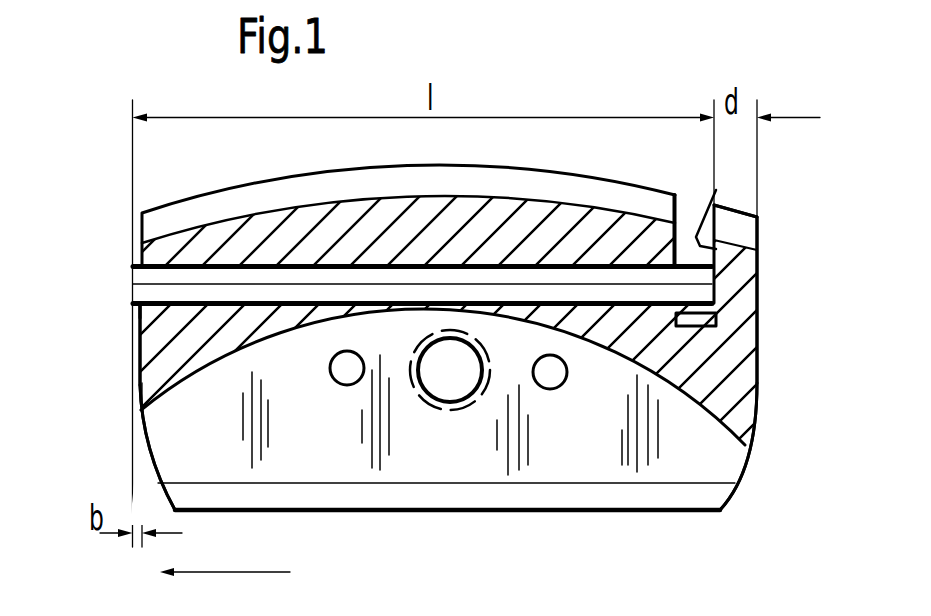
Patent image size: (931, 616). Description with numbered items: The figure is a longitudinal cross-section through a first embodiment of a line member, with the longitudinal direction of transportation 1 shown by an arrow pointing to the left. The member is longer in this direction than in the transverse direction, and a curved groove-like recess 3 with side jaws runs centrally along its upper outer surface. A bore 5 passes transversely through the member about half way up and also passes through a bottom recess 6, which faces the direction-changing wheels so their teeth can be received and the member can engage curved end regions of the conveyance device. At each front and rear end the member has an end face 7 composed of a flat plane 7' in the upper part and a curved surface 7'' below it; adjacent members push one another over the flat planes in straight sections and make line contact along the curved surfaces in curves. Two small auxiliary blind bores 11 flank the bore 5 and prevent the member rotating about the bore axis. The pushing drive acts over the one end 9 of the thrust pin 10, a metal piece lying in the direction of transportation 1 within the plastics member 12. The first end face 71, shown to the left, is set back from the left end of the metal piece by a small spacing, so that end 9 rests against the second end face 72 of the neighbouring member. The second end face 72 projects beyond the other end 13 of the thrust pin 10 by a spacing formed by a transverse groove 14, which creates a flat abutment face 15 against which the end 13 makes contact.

The longitudinal direction of transportation 1 is at (261, 572).
The groove-like recess 3 is at (228, 206).
The bore 5 is at (470, 397).
The bottom recess 6 is at (622, 465).
The end face 7 is at (465, 365).
The flat plane 7' is at (440, 261).
The curved surface 7'' is at (454, 446).
The first end face 71 is at (140, 348).
The second end face 72 is at (757, 333).
The one end of the thrust pin 9 is at (133, 277).
The thrust pin 10 is at (317, 281).
The auxiliary blind bores 11 is at (343, 382).
The plastics member 12 is at (527, 219).
The other end of the thrust pin 13 is at (712, 287).
The transverse groove 14 is at (676, 263).
The abutment face 15 is at (716, 190).